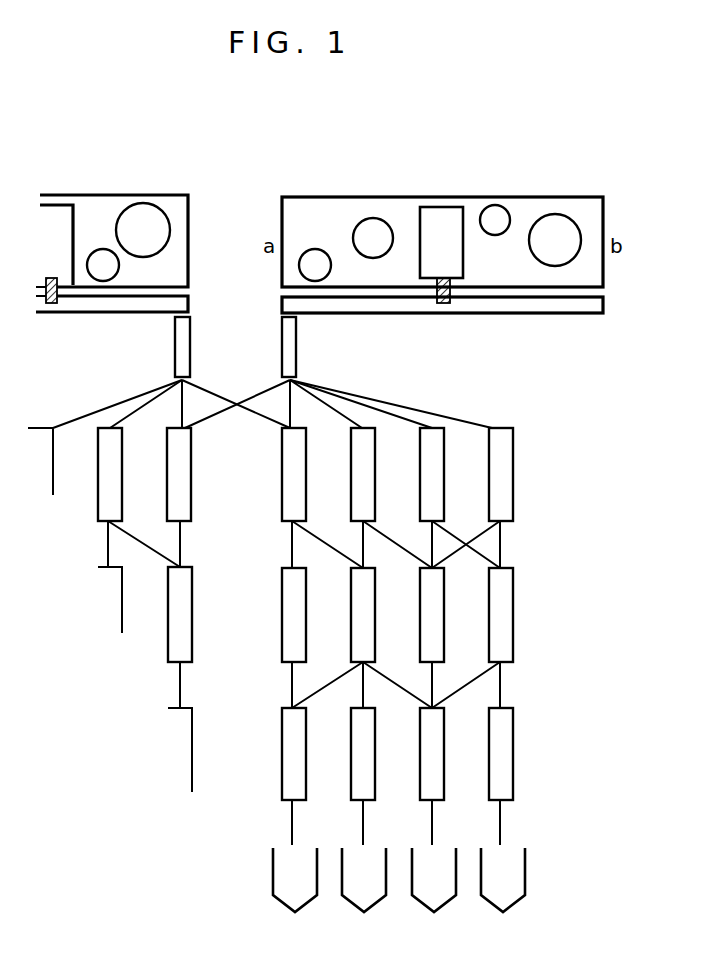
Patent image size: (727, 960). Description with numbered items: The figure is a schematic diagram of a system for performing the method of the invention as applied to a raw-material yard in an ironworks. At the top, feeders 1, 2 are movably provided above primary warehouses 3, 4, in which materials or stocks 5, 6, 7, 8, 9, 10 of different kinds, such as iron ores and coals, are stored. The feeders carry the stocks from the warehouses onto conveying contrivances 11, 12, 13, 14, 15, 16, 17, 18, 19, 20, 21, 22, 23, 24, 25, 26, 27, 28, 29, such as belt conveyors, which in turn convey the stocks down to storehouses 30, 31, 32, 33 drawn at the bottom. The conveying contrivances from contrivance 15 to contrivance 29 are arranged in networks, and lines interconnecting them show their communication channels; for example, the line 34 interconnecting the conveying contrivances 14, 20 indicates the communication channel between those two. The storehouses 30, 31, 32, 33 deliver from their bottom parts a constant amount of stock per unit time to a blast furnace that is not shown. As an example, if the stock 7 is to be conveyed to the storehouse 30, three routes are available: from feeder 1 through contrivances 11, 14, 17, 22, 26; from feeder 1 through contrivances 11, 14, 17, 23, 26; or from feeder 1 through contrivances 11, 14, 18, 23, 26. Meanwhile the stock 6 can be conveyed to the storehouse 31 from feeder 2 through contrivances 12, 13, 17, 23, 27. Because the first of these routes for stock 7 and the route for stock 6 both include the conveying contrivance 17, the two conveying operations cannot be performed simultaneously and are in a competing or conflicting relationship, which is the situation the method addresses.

The feeder 1 is at (440, 208).
The feeder 2 is at (53, 195).
The primary warehouse 3 is at (312, 196).
The primary warehouse 4 is at (186, 195).
The stock 5 is at (97, 249).
The stock 6 is at (143, 202).
The stock 7 is at (316, 249).
The stock 8 is at (371, 218).
The stock 9 is at (496, 206).
The stock 10 is at (552, 218).
The conveying contrivance 11 is at (530, 314).
The conveying contrivance 12 is at (97, 314).
The conveying contrivance 13 is at (191, 336).
The conveying contrivance 14 is at (298, 336).
The conveying contrivance 15 is at (122, 458).
The conveying contrivance 16 is at (191, 458).
The conveying contrivance 17 is at (306, 458).
The conveying contrivance 18 is at (375, 458).
The conveying contrivance 19 is at (444, 458).
The conveying contrivance 20 is at (513, 458).
The conveying contrivance 21 is at (192, 597).
The conveying contrivance 22 is at (306, 597).
The conveying contrivance 23 is at (375, 597).
The conveying contrivance 24 is at (444, 597).
The conveying contrivance 25 is at (513, 597).
The conveying contrivance 26 is at (306, 738).
The conveying contrivance 27 is at (375, 738).
The conveying contrivance 28 is at (444, 738).
The conveying contrivance 29 is at (513, 738).
The storehouse 30 is at (299, 914).
The storehouse 31 is at (368, 914).
The storehouse 32 is at (438, 914).
The storehouse 33 is at (507, 914).
The line 34 is at (405, 407).